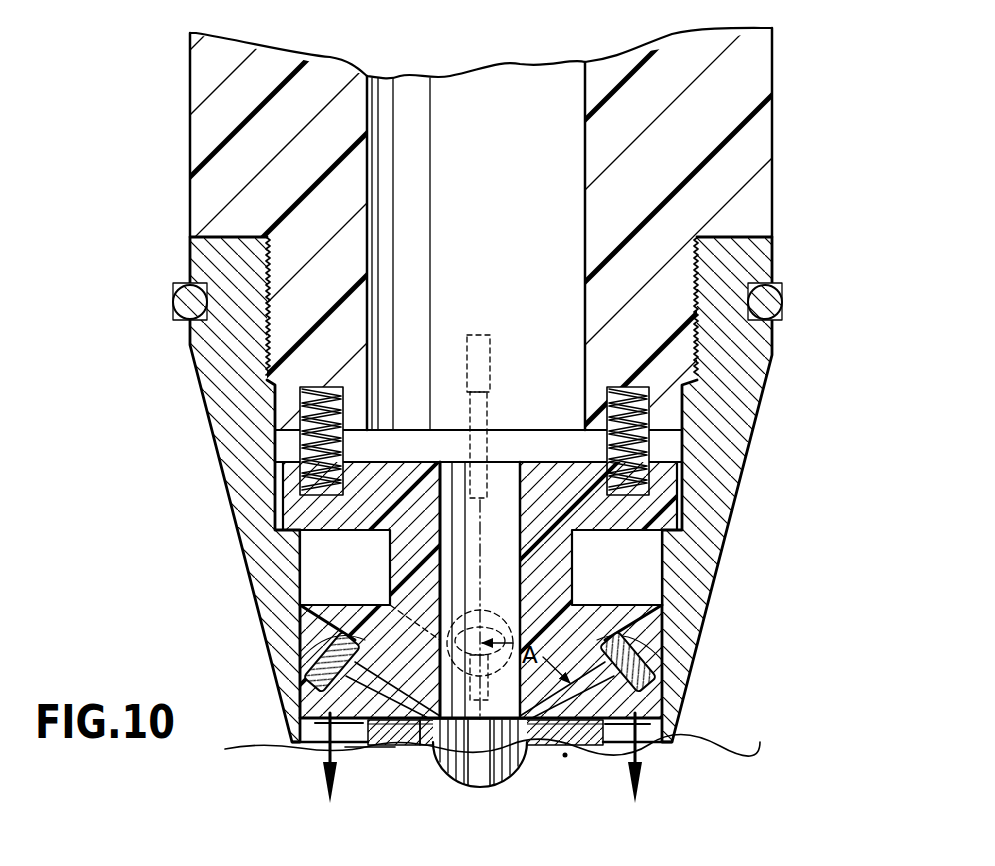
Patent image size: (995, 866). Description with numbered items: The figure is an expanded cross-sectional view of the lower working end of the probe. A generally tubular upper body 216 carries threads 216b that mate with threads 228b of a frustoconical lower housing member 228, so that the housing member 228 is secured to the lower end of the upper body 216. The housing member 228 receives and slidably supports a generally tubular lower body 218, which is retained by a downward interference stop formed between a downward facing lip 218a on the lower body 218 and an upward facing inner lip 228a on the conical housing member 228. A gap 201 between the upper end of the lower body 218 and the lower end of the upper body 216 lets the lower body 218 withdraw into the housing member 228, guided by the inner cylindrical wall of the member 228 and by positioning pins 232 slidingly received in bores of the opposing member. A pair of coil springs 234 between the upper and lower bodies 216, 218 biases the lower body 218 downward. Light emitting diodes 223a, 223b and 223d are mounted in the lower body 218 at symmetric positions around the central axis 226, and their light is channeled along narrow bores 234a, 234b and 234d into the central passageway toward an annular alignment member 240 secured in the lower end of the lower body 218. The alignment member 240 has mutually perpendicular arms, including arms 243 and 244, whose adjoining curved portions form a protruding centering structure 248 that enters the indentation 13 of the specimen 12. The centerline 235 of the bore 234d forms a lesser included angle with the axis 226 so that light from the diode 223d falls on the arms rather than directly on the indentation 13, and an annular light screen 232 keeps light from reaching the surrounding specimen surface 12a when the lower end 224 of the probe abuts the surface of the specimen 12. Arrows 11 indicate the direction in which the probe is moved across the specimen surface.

The upper body 216 is at (780, 128).
The threads of upper body 216b is at (272, 302).
The lower housing member 228 is at (200, 420).
The threads of lower housing member 228b is at (205, 292).
The upward facing inner lip 228a is at (280, 500).
The coil springs 234 is at (368, 428).
The gap 201 is at (537, 448).
The lower body 218 is at (283, 603).
The downward facing lip 218a is at (372, 531).
The light emitting diode 223a is at (440, 598).
The central axis 226 is at (521, 558).
The positioning pins 232 is at (492, 411).
The light emitting diode 223b is at (300, 645).
The bore 234b is at (300, 695).
The light emitting diode 223d is at (662, 642).
The centerline of bore 235 is at (662, 675).
The bore 234d is at (662, 694).
The annular alignment member 240 is at (566, 756).
The arm 243 is at (462, 760).
The centering structure 248 is at (438, 763).
The arm 244 is at (483, 773).
The indentation 13 is at (443, 775).
The bore 234a is at (532, 762).
The lower end of probe 224 is at (293, 745).
The specimen 12 is at (733, 742).
The outer surface of specimen 12a is at (375, 758).
The direction of motion 11 is at (488, 759).